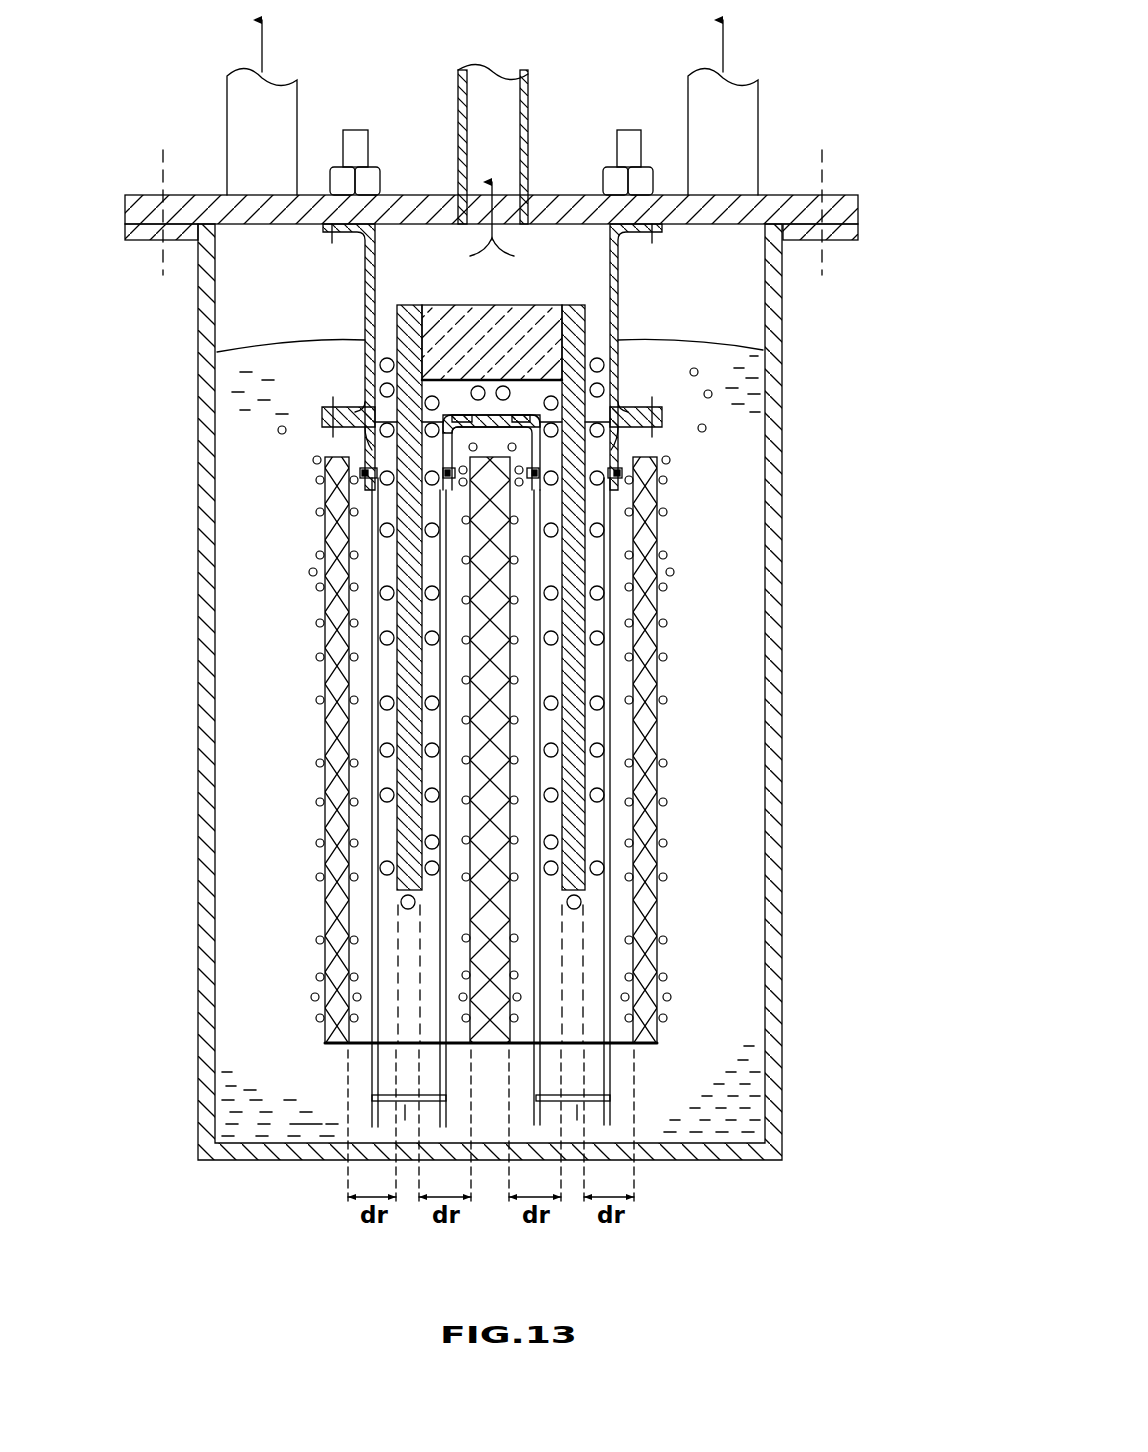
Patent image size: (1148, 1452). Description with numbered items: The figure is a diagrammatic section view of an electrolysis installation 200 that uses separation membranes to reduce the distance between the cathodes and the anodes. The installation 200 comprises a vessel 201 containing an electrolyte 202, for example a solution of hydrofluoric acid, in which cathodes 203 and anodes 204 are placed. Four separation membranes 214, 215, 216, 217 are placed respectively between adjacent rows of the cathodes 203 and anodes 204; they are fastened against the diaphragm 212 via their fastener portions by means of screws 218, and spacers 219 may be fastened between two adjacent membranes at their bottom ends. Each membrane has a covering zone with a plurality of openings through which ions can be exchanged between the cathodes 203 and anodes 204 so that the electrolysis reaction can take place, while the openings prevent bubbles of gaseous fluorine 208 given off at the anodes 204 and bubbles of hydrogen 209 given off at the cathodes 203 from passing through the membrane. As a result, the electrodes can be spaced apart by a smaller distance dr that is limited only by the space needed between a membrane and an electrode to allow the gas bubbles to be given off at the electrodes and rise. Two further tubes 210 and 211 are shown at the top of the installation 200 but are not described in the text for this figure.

The electrolysis installation 200 is at (862, 106).
The vessel 201 is at (784, 830).
The electrolyte 202 is at (703, 352).
The cathodes 203 is at (337, 988).
The anodes 204 is at (405, 697).
The bubbles of gaseous fluorine 208 is at (380, 868).
The bubbles of hydrogen 209 is at (320, 940).
The central gas outlet tube 210 is at (528, 105).
The side gas outlet tubes 211 is at (237, 112).
The diaphragm 212 is at (333, 430).
The separation membrane 214 is at (372, 1098).
The separation membrane 215 is at (446, 1073).
The separation membrane 216 is at (537, 1073).
The separation membrane 217 is at (606, 1100).
The screws 218 is at (438, 505).
The spacers 219 is at (408, 1105).